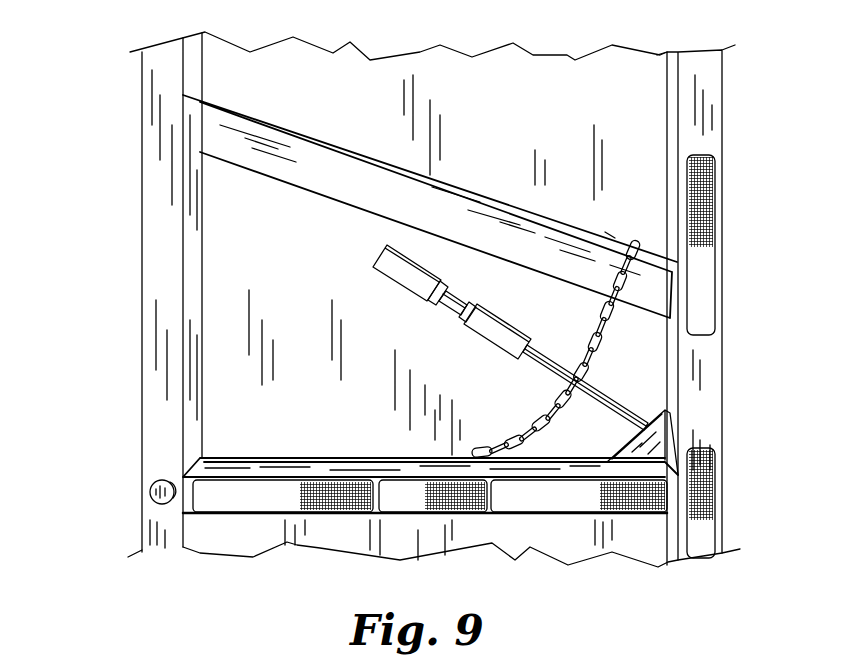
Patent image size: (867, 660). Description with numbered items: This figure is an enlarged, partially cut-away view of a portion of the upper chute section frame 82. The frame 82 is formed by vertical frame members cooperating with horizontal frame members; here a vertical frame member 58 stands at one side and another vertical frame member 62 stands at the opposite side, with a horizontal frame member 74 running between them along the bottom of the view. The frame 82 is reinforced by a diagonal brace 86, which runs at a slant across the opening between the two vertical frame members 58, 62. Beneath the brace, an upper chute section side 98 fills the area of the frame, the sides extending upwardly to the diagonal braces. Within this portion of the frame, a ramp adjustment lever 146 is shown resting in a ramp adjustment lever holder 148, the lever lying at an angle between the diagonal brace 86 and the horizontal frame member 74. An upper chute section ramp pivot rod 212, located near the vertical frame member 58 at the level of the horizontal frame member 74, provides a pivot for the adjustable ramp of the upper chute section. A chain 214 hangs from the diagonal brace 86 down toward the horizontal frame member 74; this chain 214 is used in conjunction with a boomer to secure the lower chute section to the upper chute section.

The upper chute section frame 82 is at (118, 119).
The vertical frame member 58 is at (140, 295).
The vertical frame member 62 is at (730, 108).
The diagonal brace 86 is at (470, 187).
The horizontal frame member 74 is at (243, 463).
The upper chute section side 98 is at (285, 261).
The ramp adjustment lever 146 is at (405, 275).
The ramp adjustment lever holder 148 is at (502, 320).
The chain 214 is at (603, 352).
The upper chute section ramp pivot rod 212 is at (148, 492).